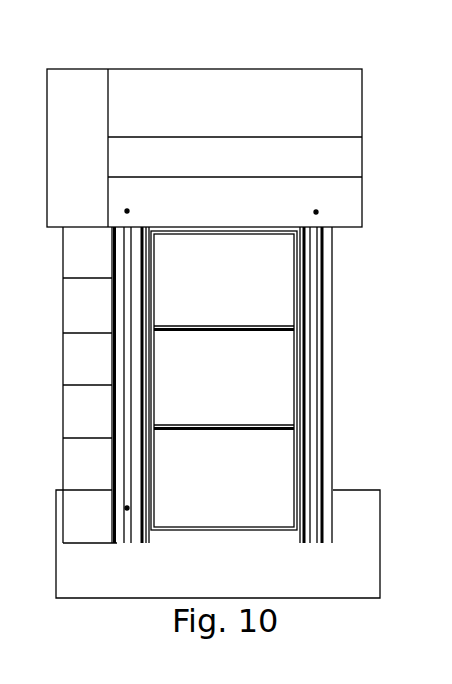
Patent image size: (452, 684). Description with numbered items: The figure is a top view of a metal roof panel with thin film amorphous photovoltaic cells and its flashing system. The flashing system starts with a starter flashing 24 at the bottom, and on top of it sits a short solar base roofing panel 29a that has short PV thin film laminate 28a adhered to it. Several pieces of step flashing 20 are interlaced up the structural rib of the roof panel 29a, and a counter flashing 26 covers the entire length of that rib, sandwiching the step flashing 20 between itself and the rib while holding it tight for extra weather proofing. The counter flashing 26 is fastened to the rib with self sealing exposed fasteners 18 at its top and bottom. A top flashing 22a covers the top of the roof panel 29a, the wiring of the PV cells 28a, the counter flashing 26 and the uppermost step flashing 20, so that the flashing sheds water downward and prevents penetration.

The self sealing exposed fastener 18 is at (127, 211).
The step flashing 20 is at (83, 260).
The top flashing 22a is at (336, 88).
The starter flashing 24 is at (355, 546).
The counter flashing 26 is at (127, 384).
The short PV thin film laminate 28a is at (241, 292).
The short solar base roofing panel 29a is at (335, 378).